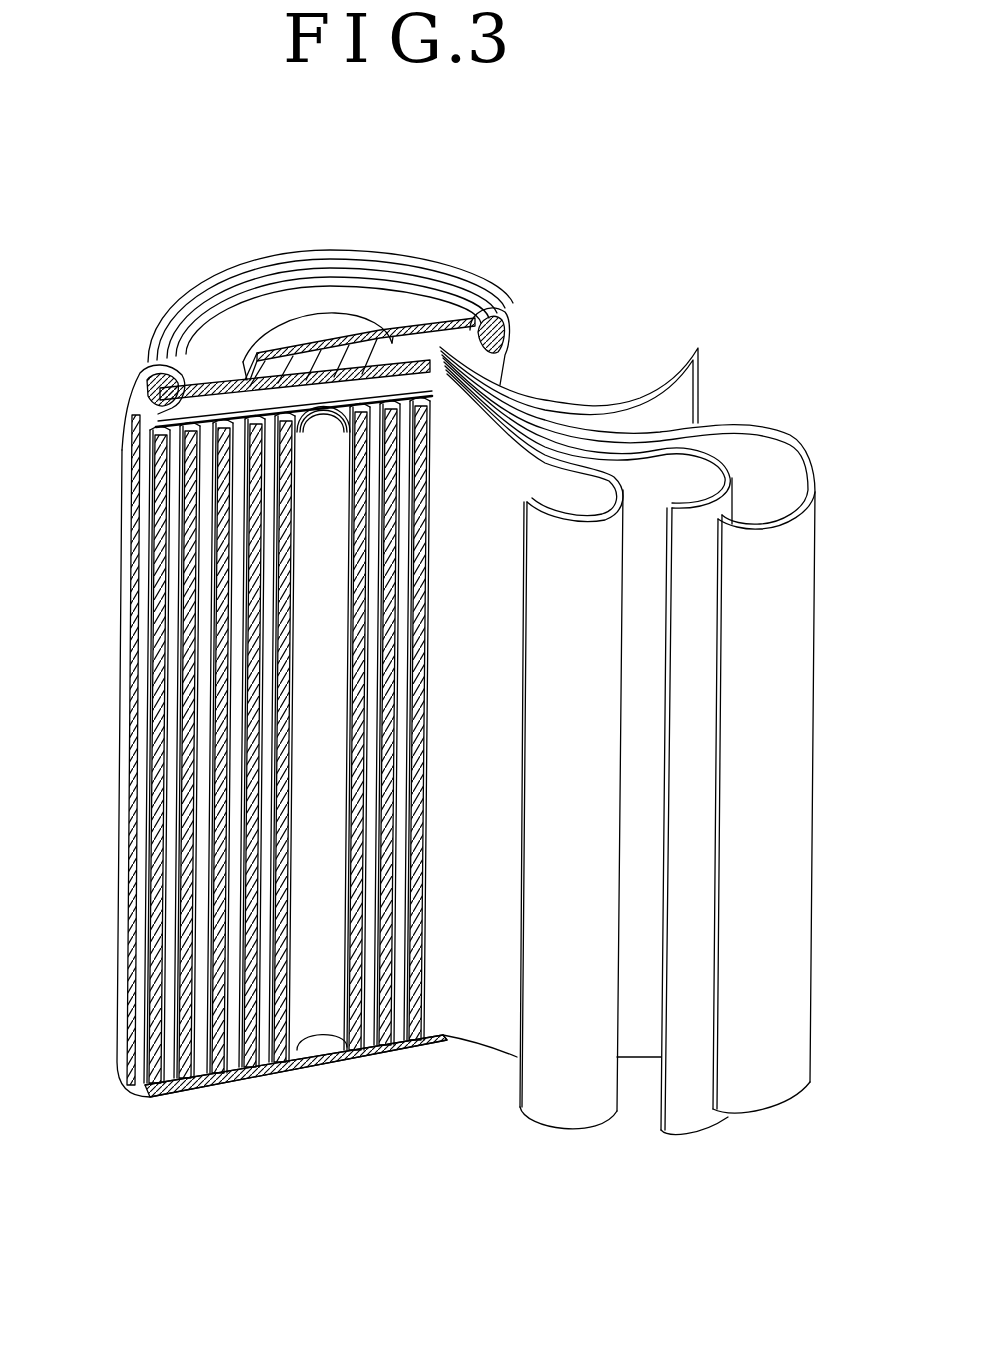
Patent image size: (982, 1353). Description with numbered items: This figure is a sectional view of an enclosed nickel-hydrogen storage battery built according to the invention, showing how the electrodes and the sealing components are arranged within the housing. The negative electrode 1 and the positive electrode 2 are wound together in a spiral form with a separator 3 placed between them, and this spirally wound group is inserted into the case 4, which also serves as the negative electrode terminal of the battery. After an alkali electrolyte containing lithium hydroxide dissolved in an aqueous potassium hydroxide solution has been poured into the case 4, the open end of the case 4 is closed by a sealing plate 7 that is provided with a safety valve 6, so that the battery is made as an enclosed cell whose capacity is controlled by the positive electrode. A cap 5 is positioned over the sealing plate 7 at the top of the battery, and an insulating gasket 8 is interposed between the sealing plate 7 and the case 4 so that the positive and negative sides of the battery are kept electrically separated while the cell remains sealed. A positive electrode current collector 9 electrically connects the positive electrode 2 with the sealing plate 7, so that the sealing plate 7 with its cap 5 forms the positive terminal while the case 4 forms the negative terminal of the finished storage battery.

The negative electrode 1 is at (778, 729).
The positive electrode 2 is at (580, 1090).
The separator 3 is at (684, 875).
The case 4 is at (120, 817).
The cap 5 is at (295, 330).
The safety valve 6 is at (340, 353).
The sealing plate 7 is at (445, 337).
The insulating gasket 8 is at (160, 412).
The positive electrode current collector 9 is at (162, 424).